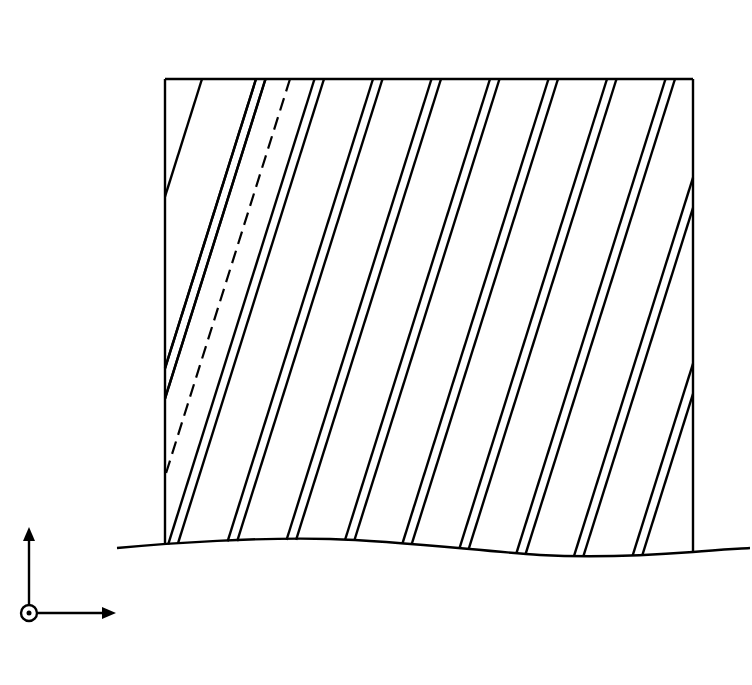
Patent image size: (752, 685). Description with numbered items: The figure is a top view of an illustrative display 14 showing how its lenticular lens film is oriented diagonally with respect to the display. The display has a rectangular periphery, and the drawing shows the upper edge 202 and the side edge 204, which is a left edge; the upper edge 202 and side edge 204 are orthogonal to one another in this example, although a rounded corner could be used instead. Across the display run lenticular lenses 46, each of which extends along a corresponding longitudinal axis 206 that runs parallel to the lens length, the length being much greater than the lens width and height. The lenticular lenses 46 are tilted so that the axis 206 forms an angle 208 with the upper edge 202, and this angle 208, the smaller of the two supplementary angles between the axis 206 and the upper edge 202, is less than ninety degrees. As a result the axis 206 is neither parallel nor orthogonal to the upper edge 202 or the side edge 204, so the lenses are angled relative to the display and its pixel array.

The device 14 is at (122, 101).
The lenticular lenses 46 is at (645, 87).
The upper edge 202 is at (408, 79).
The side edge 204 is at (165, 305).
The longitudinal axis 206 is at (252, 205).
The angle 208 is at (284, 108).